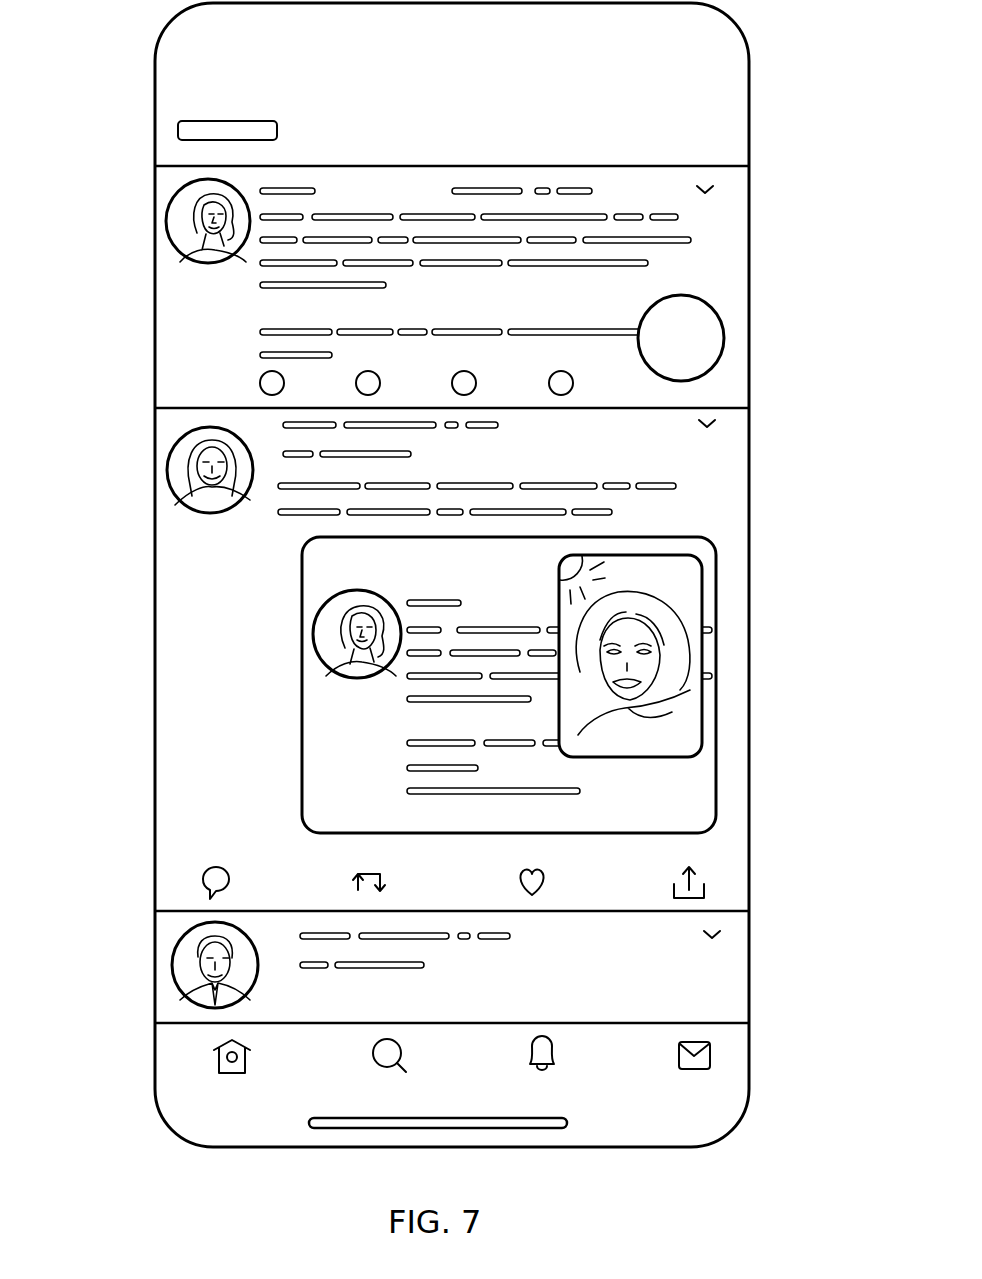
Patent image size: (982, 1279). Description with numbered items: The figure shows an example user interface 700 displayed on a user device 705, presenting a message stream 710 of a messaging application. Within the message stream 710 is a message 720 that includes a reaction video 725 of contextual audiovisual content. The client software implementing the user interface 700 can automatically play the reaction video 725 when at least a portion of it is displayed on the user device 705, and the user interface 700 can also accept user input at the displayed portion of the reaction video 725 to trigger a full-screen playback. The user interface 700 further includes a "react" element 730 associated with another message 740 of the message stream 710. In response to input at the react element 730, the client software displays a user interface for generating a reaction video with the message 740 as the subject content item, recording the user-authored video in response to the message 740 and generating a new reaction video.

The user interface 700 is at (130, 97).
The user device 705 is at (759, 90).
The message stream 710 is at (767, 429).
The message 720 is at (140, 615).
The reaction video 725 is at (731, 769).
The react element 730 is at (731, 354).
The message 740 is at (140, 332).